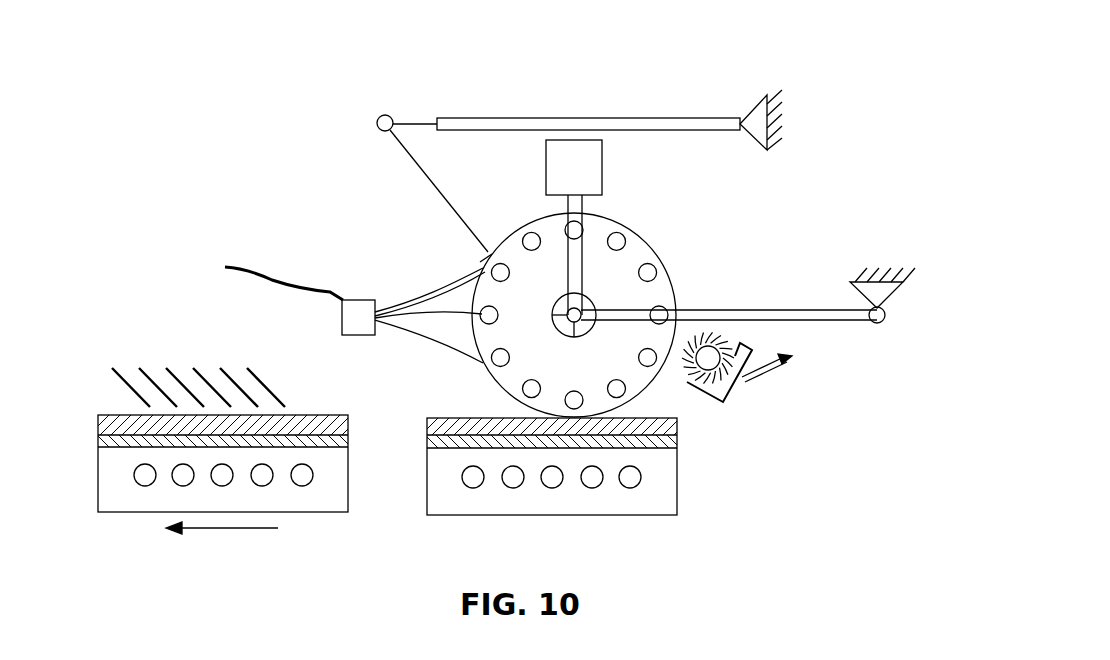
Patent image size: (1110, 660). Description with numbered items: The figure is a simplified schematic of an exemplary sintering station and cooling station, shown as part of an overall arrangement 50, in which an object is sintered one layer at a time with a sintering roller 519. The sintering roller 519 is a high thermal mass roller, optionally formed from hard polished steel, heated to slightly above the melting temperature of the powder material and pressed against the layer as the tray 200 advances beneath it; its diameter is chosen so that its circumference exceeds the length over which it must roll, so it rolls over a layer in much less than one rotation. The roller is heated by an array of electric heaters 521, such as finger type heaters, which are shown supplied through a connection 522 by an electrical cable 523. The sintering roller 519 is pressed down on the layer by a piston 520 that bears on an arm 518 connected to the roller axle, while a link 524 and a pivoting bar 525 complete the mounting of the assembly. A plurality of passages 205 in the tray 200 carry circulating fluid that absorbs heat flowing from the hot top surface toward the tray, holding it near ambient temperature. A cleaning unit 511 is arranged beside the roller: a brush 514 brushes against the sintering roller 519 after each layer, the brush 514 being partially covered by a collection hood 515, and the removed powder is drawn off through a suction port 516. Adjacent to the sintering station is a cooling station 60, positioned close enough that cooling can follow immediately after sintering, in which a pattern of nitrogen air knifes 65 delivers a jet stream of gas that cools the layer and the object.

The printing system 50 is at (845, 122).
The cooling station 60 is at (194, 341).
The nitrogen air knifes 65 is at (128, 395).
The tray 200 is at (566, 496).
The passages 205 is at (473, 488).
The energy applying unit 511 is at (834, 432).
The brush 514 is at (725, 334).
The collection hood 515 is at (770, 413).
The suction port 516 is at (765, 373).
The arm 518 is at (770, 310).
The sintering roller 519 is at (609, 291).
The piston 520 is at (602, 173).
The electric heaters 521 is at (537, 221).
The connector box 522 is at (342, 318).
The cable 523 is at (272, 280).
The link 524 is at (430, 193).
The pivot bar 525 is at (577, 118).